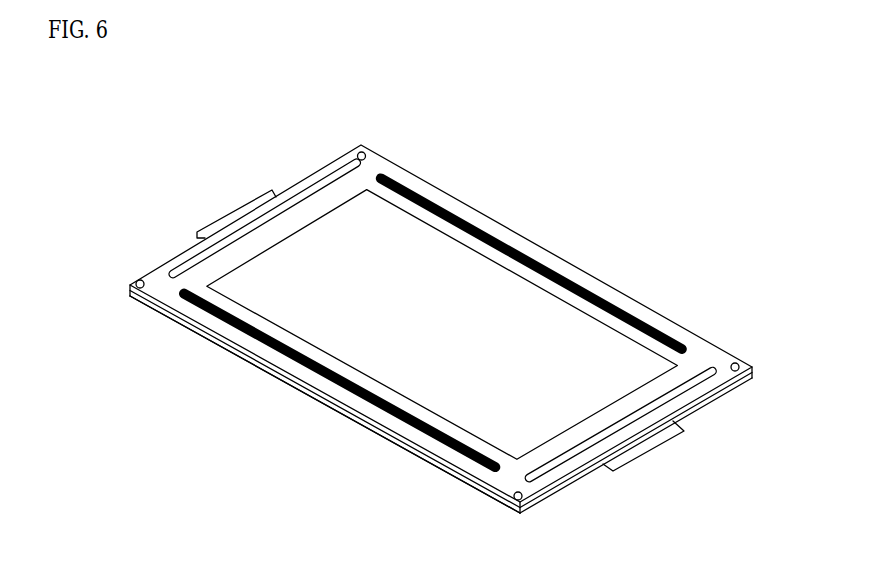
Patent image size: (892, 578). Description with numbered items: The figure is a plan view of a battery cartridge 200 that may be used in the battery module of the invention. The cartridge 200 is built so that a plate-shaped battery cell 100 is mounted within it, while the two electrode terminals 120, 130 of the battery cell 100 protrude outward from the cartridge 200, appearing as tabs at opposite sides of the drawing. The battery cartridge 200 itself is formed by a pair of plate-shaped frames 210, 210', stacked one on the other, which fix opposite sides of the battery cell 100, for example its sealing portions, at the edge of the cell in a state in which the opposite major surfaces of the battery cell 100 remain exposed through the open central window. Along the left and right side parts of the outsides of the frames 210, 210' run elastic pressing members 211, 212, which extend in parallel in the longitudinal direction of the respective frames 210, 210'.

The battery cartridge 200 is at (84, 114).
The plate-shaped frame 210 is at (441, 332).
The plate-shaped frame 210' is at (325, 404).
The elastic pressing member 211 is at (442, 212).
The elastic pressing member 212 is at (265, 333).
The electrode terminal 120 is at (237, 213).
The electrode terminal 130 is at (638, 442).
The battery cell 100 is at (550, 318).